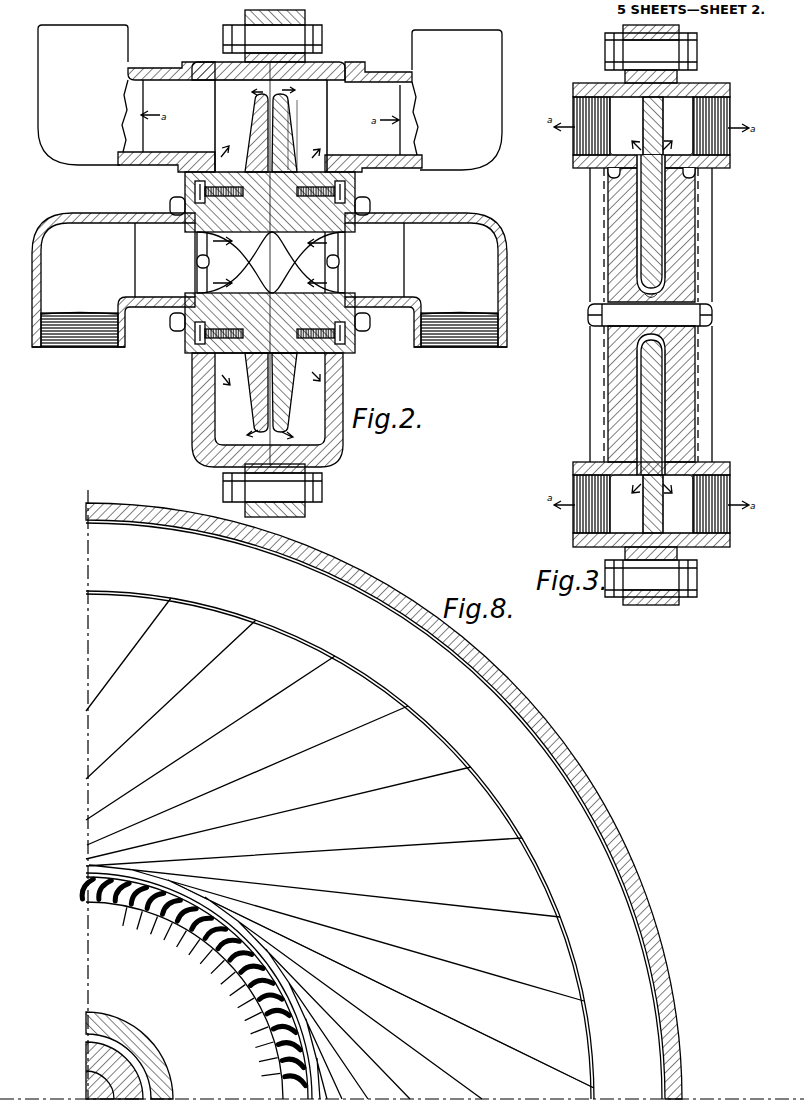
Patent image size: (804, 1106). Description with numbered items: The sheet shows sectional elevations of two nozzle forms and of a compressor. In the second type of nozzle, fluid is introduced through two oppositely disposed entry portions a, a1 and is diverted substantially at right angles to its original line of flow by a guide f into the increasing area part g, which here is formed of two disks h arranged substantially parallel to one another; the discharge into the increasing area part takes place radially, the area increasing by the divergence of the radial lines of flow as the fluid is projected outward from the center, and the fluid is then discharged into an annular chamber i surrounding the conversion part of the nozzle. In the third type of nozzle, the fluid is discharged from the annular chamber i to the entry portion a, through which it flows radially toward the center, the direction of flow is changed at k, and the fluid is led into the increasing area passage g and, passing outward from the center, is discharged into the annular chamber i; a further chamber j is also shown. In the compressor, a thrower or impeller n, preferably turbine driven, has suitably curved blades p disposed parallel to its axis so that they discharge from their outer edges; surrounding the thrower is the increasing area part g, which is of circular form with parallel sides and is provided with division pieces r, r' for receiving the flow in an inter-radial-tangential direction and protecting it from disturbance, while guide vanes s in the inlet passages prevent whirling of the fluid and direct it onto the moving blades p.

In FIG. 2, the entry portion a is at (95, 318).
In FIG. 3, the entry portion a is at (662, 223).
In FIG. 2, the entry portion a1 is at (460, 366).
In FIG. 2, the guide f is at (271, 262).
In FIG. 2, the increasing area part g is at (276, 137).
In FIG. 3, the increasing area part g is at (638, 205).
In FIG. 8, the increasing area part g is at (476, 797).
In FIG. 2, the disks h is at (257, 127).
In FIG. 2, the annular chamber i is at (271, 263).
In FIG. 3, the annular chamber i is at (626, 315).
In FIG. 3, the chamber j is at (678, 315).
In FIG. 3, the point of change of flow direction k is at (653, 298).
In FIG. 8, the division pieces r is at (340, 848).
In FIG. 8, the spoke r' is at (381, 984).
In FIG. 8, the blades p is at (288, 1012).
In FIG. 8, the guide vanes s is at (192, 940).
In FIG. 8, the thrower or impeller n is at (125, 1068).